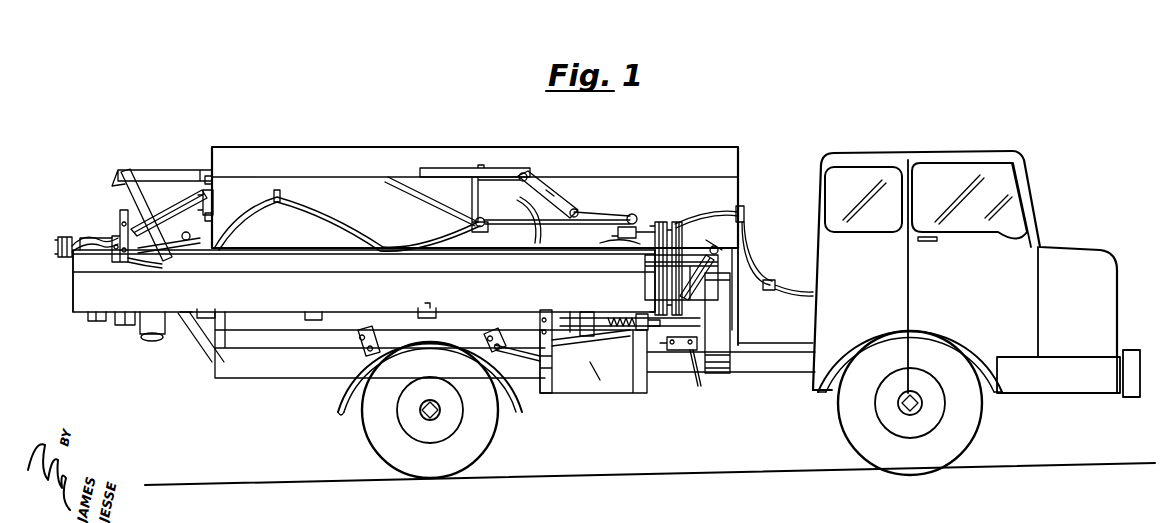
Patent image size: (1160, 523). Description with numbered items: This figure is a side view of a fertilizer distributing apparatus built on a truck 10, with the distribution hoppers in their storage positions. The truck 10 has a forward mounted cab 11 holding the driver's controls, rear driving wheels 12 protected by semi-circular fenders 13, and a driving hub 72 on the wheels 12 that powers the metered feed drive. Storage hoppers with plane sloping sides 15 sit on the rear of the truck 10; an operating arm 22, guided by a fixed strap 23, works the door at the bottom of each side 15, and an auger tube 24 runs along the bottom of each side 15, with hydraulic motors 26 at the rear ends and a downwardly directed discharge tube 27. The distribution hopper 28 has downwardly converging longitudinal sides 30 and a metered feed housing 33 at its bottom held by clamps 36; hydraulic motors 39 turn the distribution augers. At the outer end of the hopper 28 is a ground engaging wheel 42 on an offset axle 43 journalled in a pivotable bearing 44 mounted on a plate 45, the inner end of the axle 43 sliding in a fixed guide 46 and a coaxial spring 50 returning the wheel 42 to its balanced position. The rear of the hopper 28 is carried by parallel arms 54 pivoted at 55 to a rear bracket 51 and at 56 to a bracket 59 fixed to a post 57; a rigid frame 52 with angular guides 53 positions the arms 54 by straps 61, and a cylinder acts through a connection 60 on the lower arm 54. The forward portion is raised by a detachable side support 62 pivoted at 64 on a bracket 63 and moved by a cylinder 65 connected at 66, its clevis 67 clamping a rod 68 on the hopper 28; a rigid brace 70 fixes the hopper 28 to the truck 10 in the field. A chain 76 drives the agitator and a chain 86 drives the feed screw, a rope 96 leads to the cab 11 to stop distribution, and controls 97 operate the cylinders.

The truck 10 is at (777, 373).
The cab 11 is at (948, 271).
The rear driving wheels 12 is at (490, 418).
The fenders 13 is at (337, 406).
The sloping sides 15 is at (362, 211).
The operating arm 22 is at (696, 268).
The fixed strap 23 is at (715, 246).
The auger tube 24 is at (280, 320).
The hydraulic motors 26 is at (125, 326).
The discharge tube 27 is at (153, 342).
The distribution hopper 28 is at (278, 246).
The longitudinal sides 30 is at (322, 295).
The metered feed housing 33 is at (240, 312).
The clamps 36 is at (93, 321).
The hydraulic motors 39 is at (90, 256).
The ground engaging wheel 42 is at (726, 321).
The offset axle 43 is at (668, 348).
The bearing 44 is at (631, 337).
The plate 45 is at (639, 316).
The fixed guide 46 is at (587, 312).
The coaxial spring 50 is at (622, 327).
The rear bracket 51 is at (214, 207).
The rigid frame 52 is at (142, 172).
The guides 53 is at (125, 191).
The parallel arms 54 is at (175, 232).
The pivot 55 is at (213, 181).
The pivot 56 is at (120, 215).
The post 57 is at (80, 236).
The bracket 59 is at (168, 214).
The connection 60 is at (191, 236).
The straps 61 is at (163, 258).
The side support 62 is at (612, 217).
The bracket 63 is at (470, 214).
The pivot 64 is at (483, 227).
The cylinder 65 is at (578, 206).
The connection 66 is at (574, 219).
The clevis 67 is at (638, 219).
The rod 68 is at (628, 240).
The rigid brace 70 is at (553, 362).
The driving hub 72 is at (432, 420).
The chain 76 is at (681, 261).
The chain 86 is at (690, 224).
The rope 96 is at (432, 242).
The controls 97 is at (692, 352).